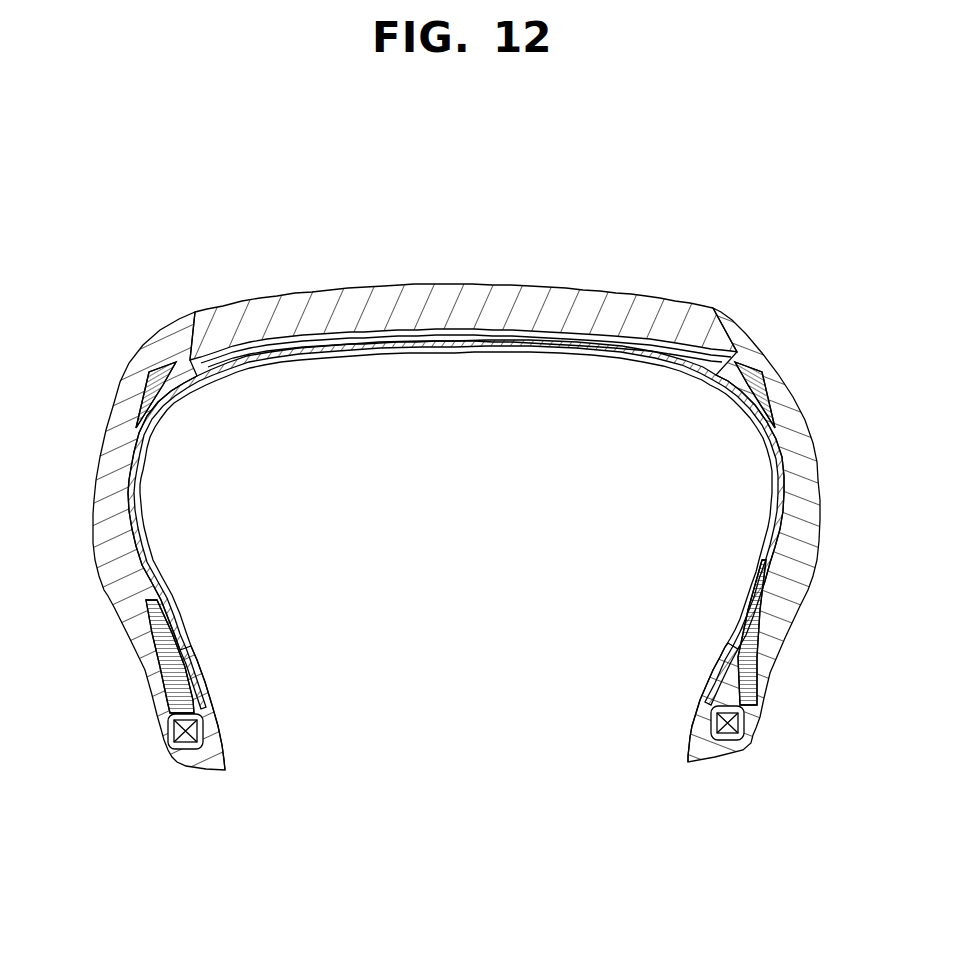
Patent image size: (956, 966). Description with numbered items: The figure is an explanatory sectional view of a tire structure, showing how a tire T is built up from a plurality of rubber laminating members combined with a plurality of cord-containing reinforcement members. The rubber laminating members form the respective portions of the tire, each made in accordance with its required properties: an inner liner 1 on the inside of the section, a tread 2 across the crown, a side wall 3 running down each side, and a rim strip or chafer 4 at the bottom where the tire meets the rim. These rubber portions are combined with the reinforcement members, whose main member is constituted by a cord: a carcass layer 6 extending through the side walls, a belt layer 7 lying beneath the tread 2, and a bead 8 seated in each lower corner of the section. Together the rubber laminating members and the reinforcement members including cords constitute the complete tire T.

The tire T is at (444, 511).
The inner liner 1 is at (452, 348).
The tread 2 is at (418, 293).
The side wall 3 is at (130, 388).
The rim strip or chafer 4 is at (188, 750).
The carcass layer 6 is at (732, 640).
The belt layer 7 is at (318, 340).
The bead 8 is at (192, 730).